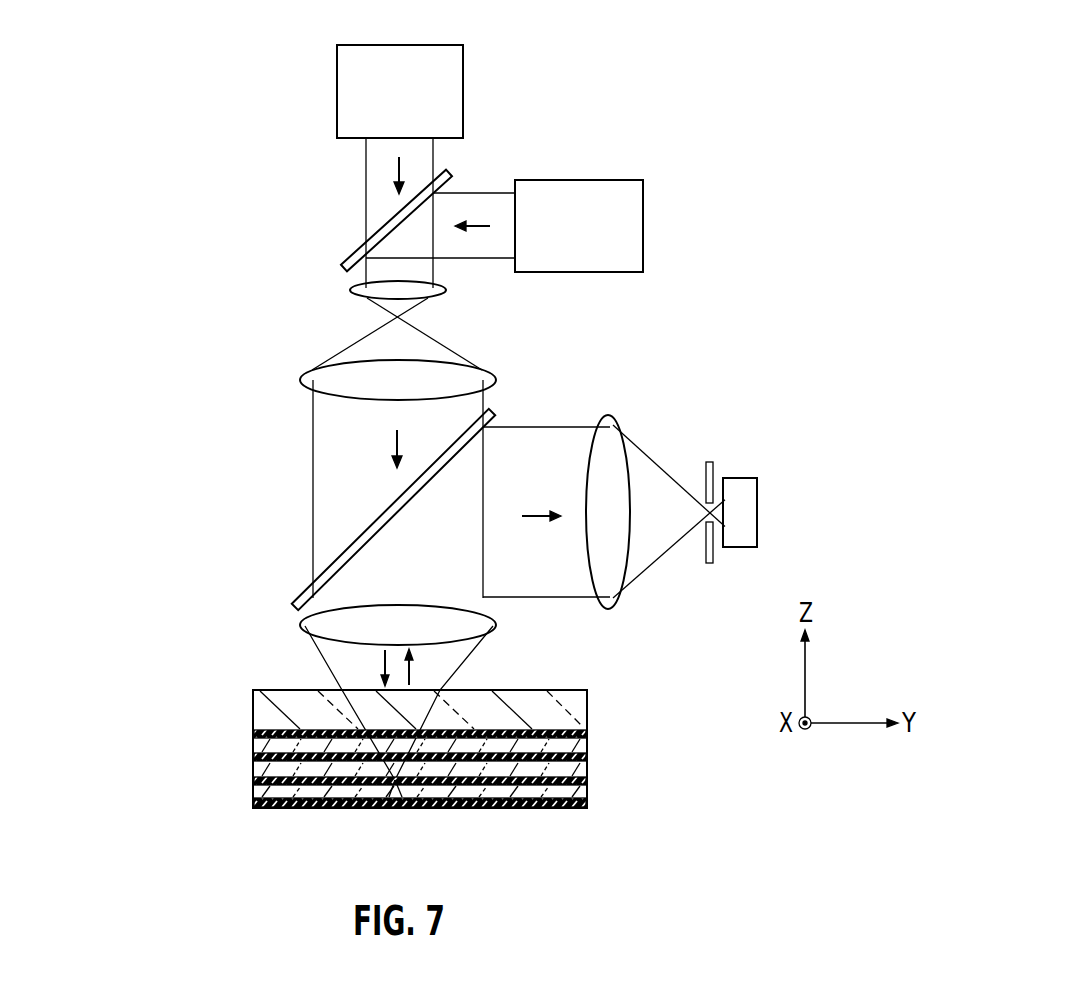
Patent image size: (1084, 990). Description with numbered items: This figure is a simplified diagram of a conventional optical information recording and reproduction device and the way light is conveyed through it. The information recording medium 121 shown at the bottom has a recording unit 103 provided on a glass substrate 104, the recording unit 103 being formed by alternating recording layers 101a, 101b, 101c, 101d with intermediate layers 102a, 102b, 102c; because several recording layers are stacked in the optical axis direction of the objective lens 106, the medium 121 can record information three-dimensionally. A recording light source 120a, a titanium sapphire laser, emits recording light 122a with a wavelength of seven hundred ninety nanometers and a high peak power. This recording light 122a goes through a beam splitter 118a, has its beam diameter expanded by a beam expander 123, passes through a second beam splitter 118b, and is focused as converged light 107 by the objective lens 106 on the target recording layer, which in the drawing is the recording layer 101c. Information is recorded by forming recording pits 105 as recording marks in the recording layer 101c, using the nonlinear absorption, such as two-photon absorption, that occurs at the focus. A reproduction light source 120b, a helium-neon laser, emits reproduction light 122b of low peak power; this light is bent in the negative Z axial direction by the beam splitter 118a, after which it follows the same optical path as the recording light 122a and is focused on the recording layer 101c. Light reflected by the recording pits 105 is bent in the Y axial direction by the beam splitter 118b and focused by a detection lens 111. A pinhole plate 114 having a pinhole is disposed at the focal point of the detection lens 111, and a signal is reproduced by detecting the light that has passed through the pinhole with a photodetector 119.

The recording light source 120a is at (454, 80).
The reproduction light source 120b is at (642, 225).
The recording light 122a is at (368, 175).
The reproduction light 122b is at (482, 193).
The beam splitter 118a is at (350, 262).
The beam splitter 118b is at (302, 592).
The beam expander 123 is at (295, 285).
The detection lens 111 is at (613, 417).
The pinhole plate 114 is at (711, 458).
The photodetector 119 is at (750, 512).
The objective lens 106 is at (495, 623).
The converged light 107 is at (330, 667).
The glass substrate 104 is at (262, 702).
The recording unit 103 is at (344, 762).
The recording layer 101a is at (255, 735).
The recording layer 101b is at (255, 758).
The recording layer 101c is at (255, 781).
The recording layer 101d is at (372, 803).
The intermediate layer 102a is at (587, 744).
The intermediate layer 102b is at (580, 769).
The intermediate layer 102c is at (580, 792).
The recording pits 105 is at (396, 782).
The information recording medium 121 is at (559, 822).